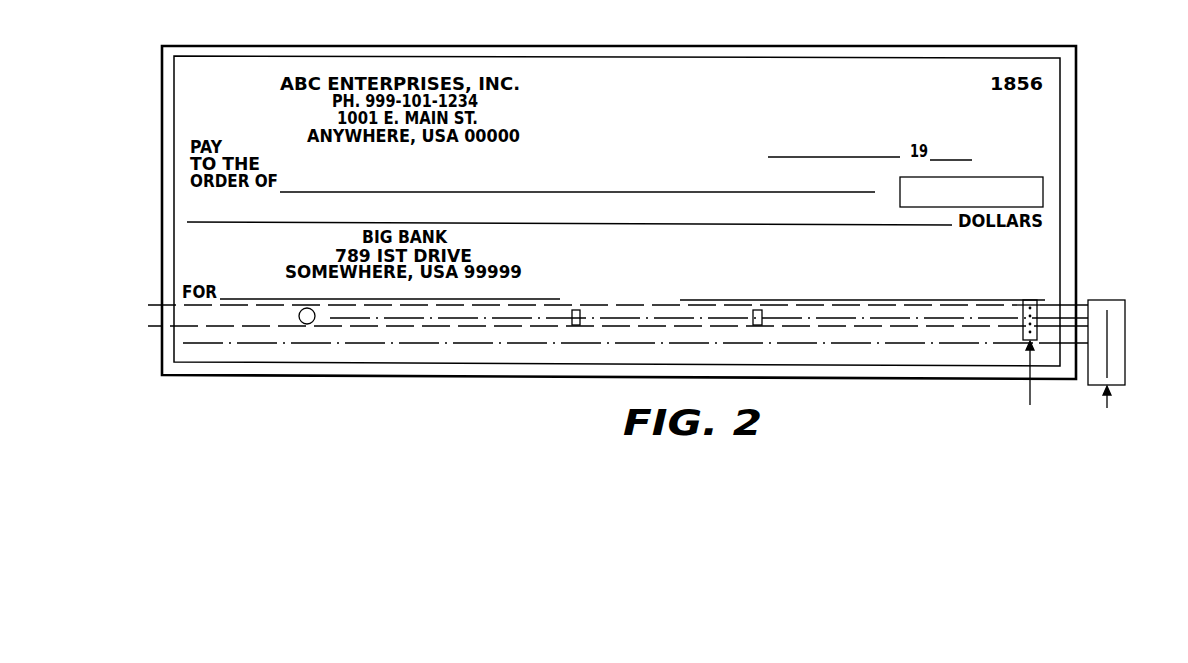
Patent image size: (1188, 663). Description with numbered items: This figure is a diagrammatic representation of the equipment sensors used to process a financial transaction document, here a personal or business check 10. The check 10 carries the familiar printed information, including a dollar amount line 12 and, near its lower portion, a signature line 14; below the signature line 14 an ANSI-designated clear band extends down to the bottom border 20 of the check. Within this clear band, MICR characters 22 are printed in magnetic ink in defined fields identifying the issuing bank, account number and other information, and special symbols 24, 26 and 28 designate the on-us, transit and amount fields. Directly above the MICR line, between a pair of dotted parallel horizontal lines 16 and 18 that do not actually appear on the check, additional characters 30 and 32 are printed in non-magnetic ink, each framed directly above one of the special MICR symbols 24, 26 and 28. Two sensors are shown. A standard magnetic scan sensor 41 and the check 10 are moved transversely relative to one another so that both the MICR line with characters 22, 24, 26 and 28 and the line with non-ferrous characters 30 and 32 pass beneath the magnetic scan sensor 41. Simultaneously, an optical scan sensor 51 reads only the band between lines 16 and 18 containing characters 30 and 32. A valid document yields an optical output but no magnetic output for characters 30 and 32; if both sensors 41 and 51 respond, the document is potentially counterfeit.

The check 10 is at (725, 107).
The dollar amount line 12 is at (807, 230).
The signature line 14 is at (897, 303).
The dotted parallel horizontal line 16 is at (619, 305).
The dotted parallel horizontal line 18 is at (670, 328).
The bottom border 20 is at (932, 363).
The MICR characters 22 is at (478, 348).
The special symbol 24 is at (307, 345).
The special symbol 26 is at (580, 349).
The special symbol 28 is at (770, 349).
The non-magnetic ink character 30 is at (299, 316).
The non-magnetic ink character 32 is at (576, 310).
The magnetic scan sensor 41 is at (1105, 300).
The optical scan sensor 51 is at (1030, 300).